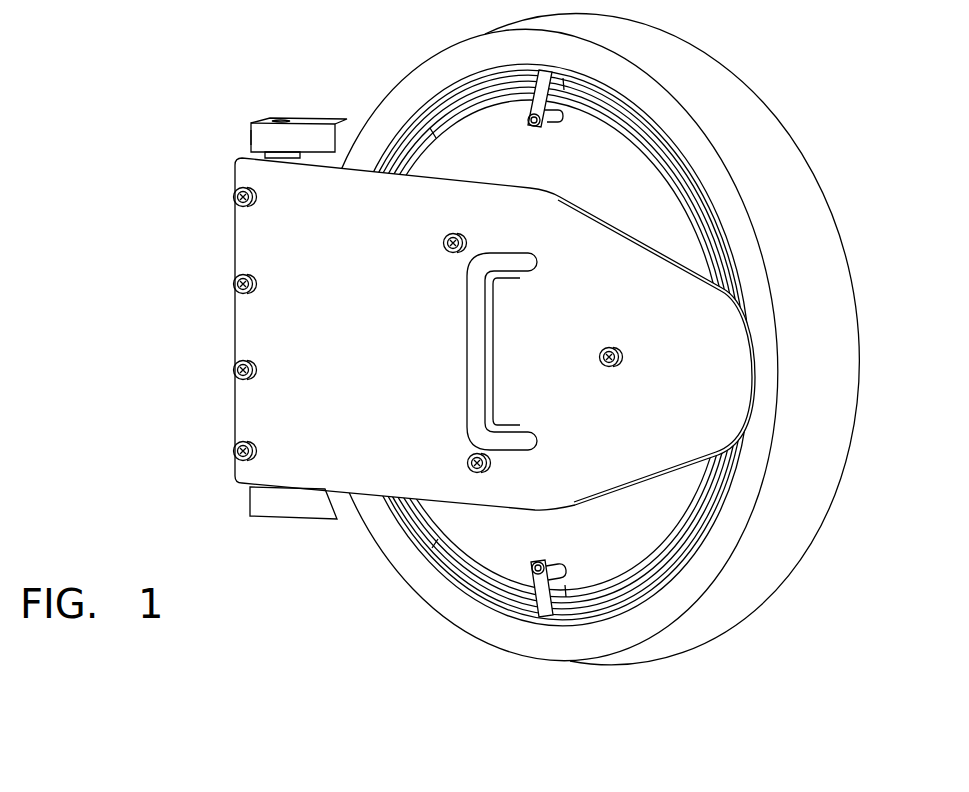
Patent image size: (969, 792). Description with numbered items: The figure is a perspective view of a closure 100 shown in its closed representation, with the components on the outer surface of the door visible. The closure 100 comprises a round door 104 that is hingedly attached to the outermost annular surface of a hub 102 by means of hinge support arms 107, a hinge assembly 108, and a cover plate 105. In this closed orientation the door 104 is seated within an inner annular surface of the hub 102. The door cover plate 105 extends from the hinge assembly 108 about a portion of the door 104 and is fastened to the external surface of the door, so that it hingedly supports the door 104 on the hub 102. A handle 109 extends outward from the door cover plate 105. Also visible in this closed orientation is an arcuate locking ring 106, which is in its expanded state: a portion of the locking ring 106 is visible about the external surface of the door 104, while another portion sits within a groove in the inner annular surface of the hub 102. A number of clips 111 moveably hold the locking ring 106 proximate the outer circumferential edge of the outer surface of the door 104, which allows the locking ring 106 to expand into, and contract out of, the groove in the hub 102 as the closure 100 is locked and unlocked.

The closure 100 is at (672, 228).
The hub 102 is at (730, 99).
The round door 104 is at (490, 137).
The cover plate 105 is at (293, 322).
The arcuate locking ring 106 is at (445, 556).
The hinge support arms 107 is at (314, 144).
The hinge assembly 108 is at (249, 136).
The handle 109 is at (477, 416).
The clips 111 is at (548, 70).